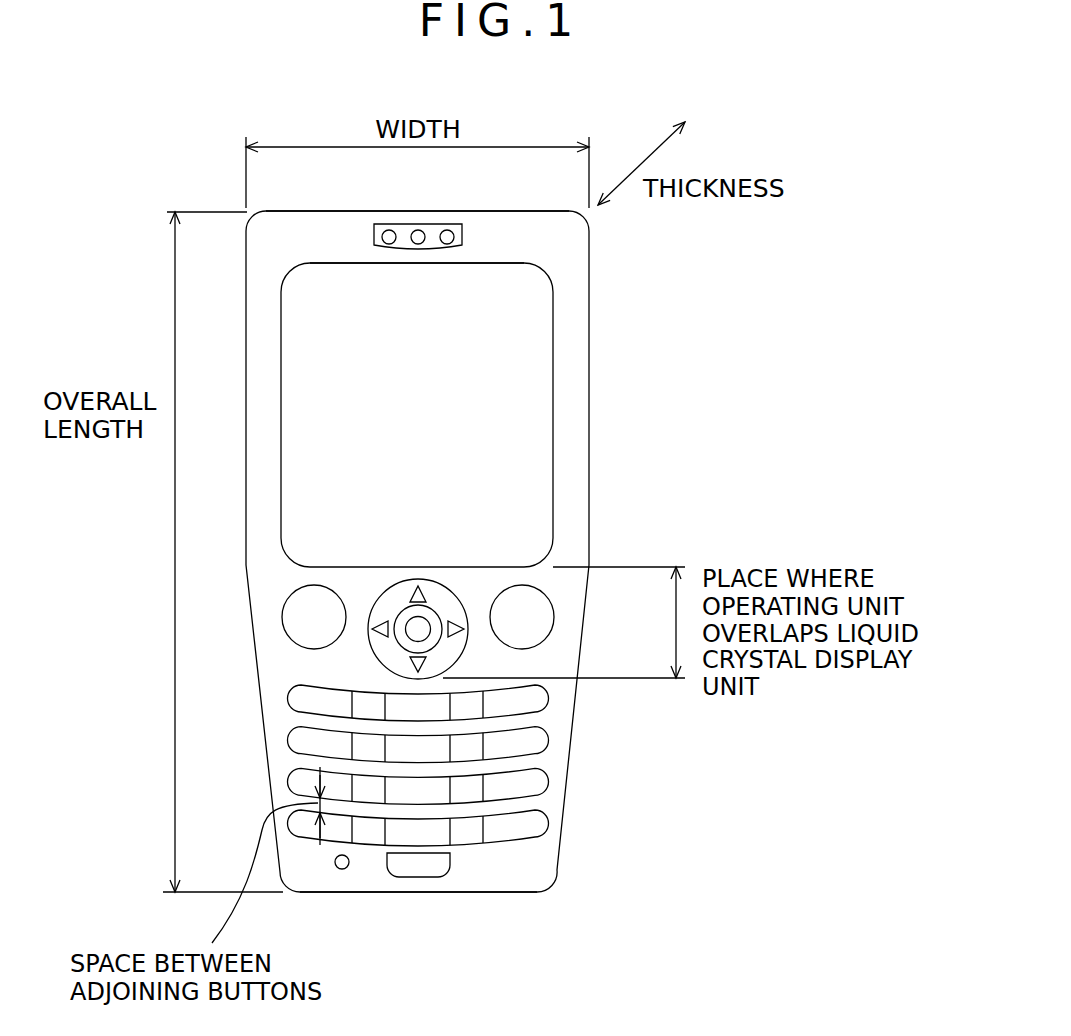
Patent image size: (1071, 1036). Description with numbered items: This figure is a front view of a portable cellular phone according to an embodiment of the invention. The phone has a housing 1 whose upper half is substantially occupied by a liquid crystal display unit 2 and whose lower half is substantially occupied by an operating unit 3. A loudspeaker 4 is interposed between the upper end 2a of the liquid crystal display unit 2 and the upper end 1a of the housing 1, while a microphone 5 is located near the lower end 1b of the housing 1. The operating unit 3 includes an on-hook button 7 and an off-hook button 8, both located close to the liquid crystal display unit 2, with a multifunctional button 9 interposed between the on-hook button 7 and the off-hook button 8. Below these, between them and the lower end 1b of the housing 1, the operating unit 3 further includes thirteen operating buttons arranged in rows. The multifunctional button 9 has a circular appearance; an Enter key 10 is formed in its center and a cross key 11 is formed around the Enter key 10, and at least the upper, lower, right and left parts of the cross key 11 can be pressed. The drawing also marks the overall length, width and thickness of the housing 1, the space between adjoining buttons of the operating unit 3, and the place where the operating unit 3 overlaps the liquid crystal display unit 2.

The housing 1 is at (577, 260).
The upper end of the housing 1a is at (321, 213).
The lower end of the housing 1b is at (482, 893).
The liquid crystal display unit 2 is at (528, 470).
The upper end of the liquid crystal display unit 2a is at (386, 265).
The operating unit 3 is at (578, 705).
The loudspeaker 4 is at (473, 240).
The microphone 5 is at (335, 870).
The on-hook button 7 is at (532, 602).
The off-hook button 8 is at (298, 618).
The multifunctional button 9 is at (368, 637).
The Enter key 10 is at (428, 635).
The cross key 11 is at (425, 678).